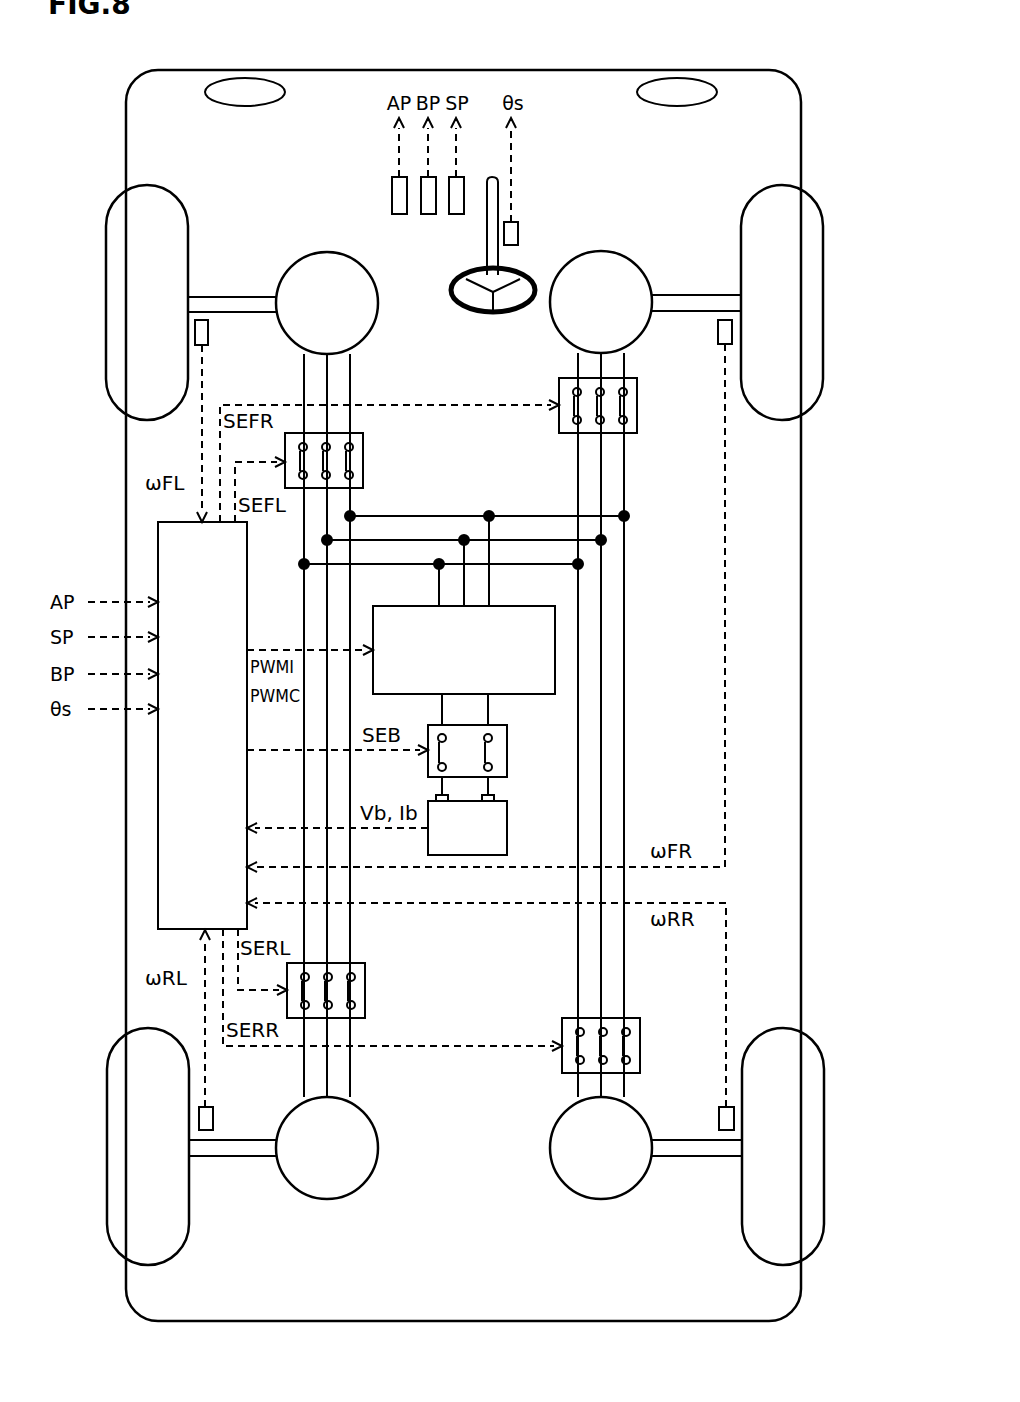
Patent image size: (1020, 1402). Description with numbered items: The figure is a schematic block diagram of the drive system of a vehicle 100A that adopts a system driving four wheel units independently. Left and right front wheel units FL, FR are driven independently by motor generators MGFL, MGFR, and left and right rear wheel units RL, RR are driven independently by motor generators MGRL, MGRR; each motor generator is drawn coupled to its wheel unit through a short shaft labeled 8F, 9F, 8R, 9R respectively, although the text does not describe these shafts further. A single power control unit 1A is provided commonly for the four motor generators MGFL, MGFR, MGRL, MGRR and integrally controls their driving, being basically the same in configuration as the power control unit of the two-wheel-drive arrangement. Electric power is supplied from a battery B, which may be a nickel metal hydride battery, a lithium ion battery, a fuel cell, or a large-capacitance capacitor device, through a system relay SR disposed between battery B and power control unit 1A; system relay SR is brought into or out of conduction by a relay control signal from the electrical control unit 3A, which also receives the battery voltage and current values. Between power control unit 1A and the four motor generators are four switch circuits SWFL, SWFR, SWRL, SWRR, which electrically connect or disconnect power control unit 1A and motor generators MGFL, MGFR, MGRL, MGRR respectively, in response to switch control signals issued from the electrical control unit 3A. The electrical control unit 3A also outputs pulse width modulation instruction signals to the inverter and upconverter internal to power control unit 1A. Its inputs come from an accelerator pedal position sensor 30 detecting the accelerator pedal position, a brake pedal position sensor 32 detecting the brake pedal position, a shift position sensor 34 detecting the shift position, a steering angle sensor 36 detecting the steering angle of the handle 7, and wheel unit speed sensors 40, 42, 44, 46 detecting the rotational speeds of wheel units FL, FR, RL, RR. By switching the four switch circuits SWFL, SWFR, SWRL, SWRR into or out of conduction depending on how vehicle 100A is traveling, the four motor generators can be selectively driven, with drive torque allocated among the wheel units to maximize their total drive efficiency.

The vehicle 100A is at (735, 70).
The left front wheel unit FL is at (106, 303).
The right front wheel unit FR is at (823, 303).
The left rear wheel unit RL is at (107, 1148).
The right rear wheel unit RR is at (824, 1148).
The front left axle 8F is at (235, 297).
The front right axle 9F is at (697, 295).
The rear left axle 8R is at (238, 1156).
The rear right axle 9R is at (700, 1156).
The motor generator MGFL is at (328, 252).
The motor generator MGFR is at (601, 251).
The motor generator MGRL is at (329, 1199).
The motor generator MGRR is at (603, 1199).
The switch circuit SWFL is at (363, 462).
The switch circuit SWFR is at (637, 415).
The switch circuit SWRL is at (365, 991).
The switch circuit SWRR is at (640, 1045).
The power control unit 1A is at (520, 606).
The system relay SR is at (507, 751).
The battery B is at (507, 830).
The electrical control unit (ECU) 3A is at (158, 552).
The wheel unit speed sensor 40 is at (208, 332).
The wheel unit speed sensor 42 is at (718, 332).
The wheel unit speed sensor 44 is at (213, 1119).
The wheel unit speed sensor 46 is at (719, 1119).
The accelerator pedal position sensor 30 is at (399, 214).
The brake pedal position sensor 32 is at (428, 214).
The shift position sensor 34 is at (456, 214).
The steering angle sensor 36 is at (518, 232).
The handle 7 is at (470, 308).